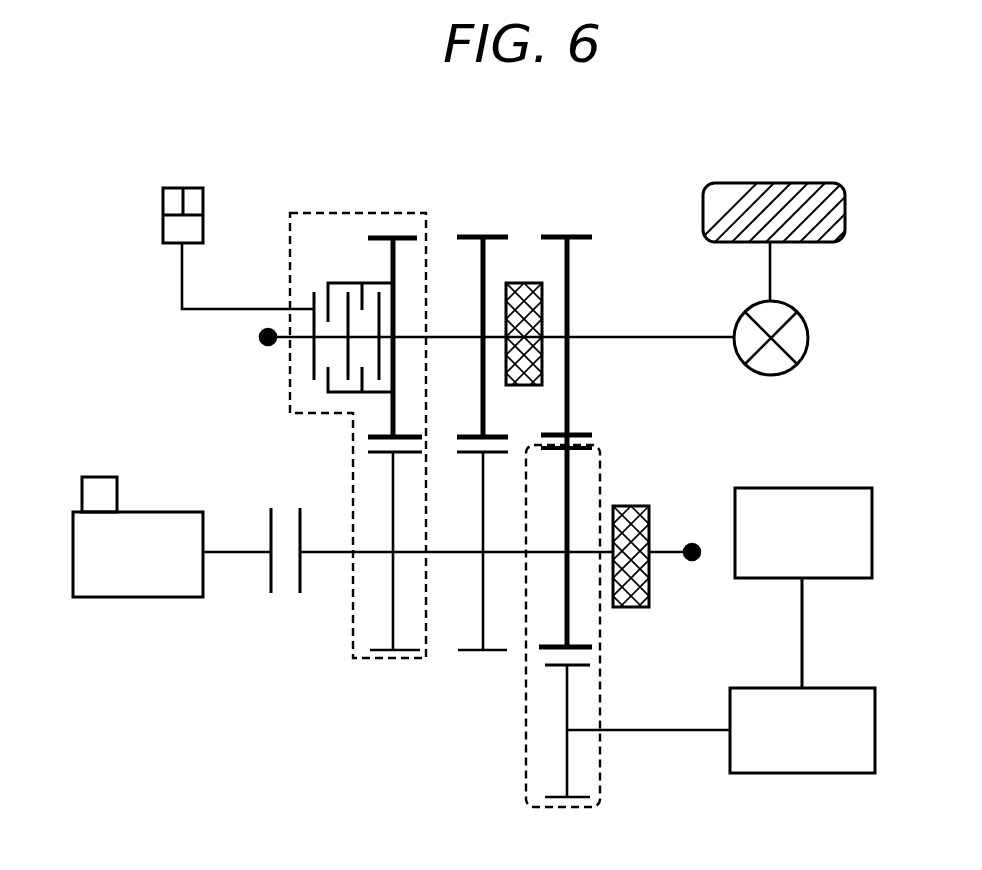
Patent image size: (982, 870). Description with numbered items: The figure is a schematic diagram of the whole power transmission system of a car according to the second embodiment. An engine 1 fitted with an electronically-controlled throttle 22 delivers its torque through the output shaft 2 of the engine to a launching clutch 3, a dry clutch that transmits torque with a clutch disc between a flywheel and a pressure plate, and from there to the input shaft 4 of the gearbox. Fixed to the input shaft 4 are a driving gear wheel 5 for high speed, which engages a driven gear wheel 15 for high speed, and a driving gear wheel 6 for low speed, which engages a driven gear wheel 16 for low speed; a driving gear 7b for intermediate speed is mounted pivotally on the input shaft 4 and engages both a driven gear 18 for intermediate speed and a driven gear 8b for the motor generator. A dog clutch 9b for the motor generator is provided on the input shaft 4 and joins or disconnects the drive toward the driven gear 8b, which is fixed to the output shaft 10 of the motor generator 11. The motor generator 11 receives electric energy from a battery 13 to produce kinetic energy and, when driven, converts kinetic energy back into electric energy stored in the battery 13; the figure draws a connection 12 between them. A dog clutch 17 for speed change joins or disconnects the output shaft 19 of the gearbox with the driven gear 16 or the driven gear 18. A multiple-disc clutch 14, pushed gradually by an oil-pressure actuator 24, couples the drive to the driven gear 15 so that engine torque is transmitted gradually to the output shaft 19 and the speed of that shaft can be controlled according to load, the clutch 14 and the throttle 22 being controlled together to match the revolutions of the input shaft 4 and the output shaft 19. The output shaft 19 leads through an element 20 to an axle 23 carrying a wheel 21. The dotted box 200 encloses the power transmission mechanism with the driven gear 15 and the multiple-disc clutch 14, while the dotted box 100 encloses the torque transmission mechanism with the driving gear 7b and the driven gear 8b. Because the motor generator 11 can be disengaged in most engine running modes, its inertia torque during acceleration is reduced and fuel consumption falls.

The engine 1 is at (88, 587).
The output shaft of the engine 2 is at (238, 557).
The launching clutch 3 is at (278, 512).
The input shaft of the gearbox 4 is at (325, 557).
The driving gear wheel for high speed 5 is at (393, 625).
The driving gear wheel for low speed 6 is at (483, 622).
The driving gear for intermediate speed 7b is at (572, 463).
The driven gear for the motor generator 8b is at (567, 767).
The dog clutch for the motor generator 9b is at (637, 608).
The output shaft of the motor generator 10 is at (693, 733).
The motor generator 11 is at (800, 763).
The electrical connection 12 is at (803, 637).
The battery 13 is at (792, 492).
The multiple-disc clutch 14 is at (332, 285).
The driven gear wheel for high speed 15 is at (393, 237).
The driven gear wheel for low speed 16 is at (479, 237).
The dog clutch for speed change 17 is at (527, 283).
The driven gear for intermediate speed 18 is at (570, 235).
The output shaft of the gearbox 19 is at (629, 337).
The differential 20 is at (800, 337).
The wheel 21 is at (787, 190).
The electronically-controlled throttle 22 is at (103, 488).
The axle 23 is at (773, 278).
The oil-pressure actuator 24 is at (174, 188).
The dotted box 100 is at (600, 500).
The dotted box 200 is at (289, 232).